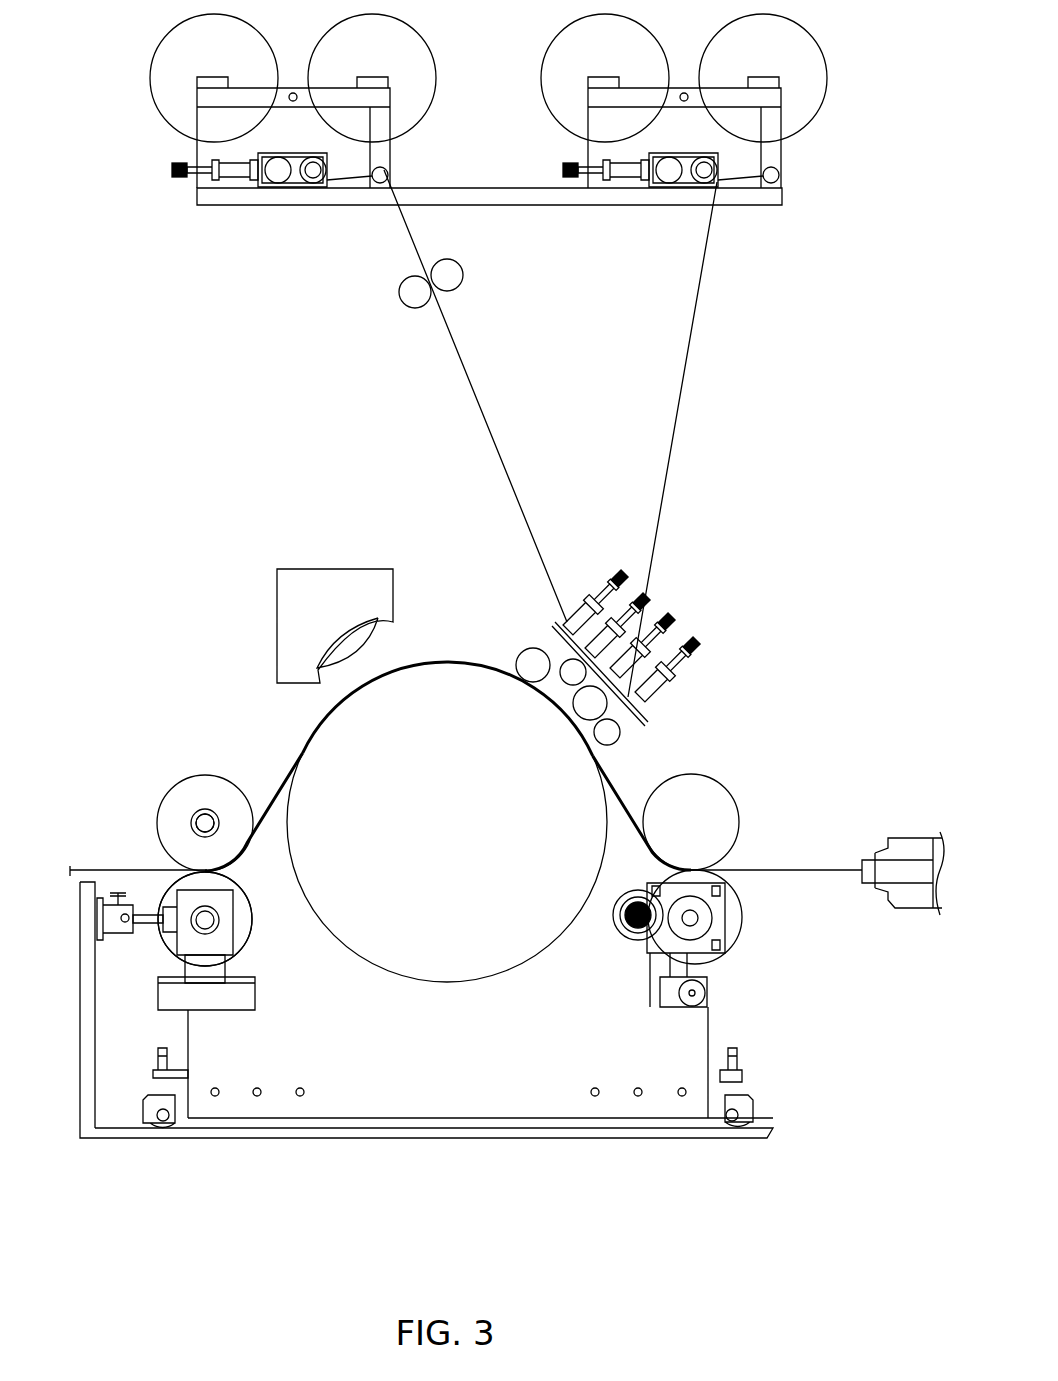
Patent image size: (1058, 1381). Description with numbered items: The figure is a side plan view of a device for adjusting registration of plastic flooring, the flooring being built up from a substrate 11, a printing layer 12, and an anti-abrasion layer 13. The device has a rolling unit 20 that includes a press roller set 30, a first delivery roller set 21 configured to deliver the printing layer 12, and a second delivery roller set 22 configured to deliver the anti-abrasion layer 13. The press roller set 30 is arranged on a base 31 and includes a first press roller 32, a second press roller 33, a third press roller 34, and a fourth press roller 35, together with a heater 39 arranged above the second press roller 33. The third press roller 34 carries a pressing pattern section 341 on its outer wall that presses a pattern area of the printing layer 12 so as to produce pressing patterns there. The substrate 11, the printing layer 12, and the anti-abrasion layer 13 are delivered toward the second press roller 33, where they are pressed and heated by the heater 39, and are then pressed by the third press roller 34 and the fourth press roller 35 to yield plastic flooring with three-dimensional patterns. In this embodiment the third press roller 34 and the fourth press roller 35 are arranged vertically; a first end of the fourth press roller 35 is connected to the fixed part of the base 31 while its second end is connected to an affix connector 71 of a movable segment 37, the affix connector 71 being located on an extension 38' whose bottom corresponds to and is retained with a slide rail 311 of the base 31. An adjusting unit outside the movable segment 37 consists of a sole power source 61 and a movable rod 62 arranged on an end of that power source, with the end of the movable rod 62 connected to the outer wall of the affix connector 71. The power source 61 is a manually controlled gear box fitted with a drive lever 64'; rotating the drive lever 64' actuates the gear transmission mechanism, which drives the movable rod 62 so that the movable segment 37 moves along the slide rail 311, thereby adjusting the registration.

The substrate 11 is at (820, 868).
The printing layer 12 is at (705, 248).
The anti-abrasion layer 13 is at (412, 235).
The rolling unit 20 is at (872, 358).
The first delivery roller set 21 is at (775, 152).
The second delivery roller set 22 is at (205, 148).
The press roller set 30 is at (762, 688).
The base 31 is at (427, 1093).
The slide rail 311 is at (252, 980).
The first press roller 32 is at (730, 935).
The second press roller 33 is at (395, 975).
The third press roller 34 is at (223, 790).
The pressing pattern section 341 is at (195, 775).
The fourth press roller 35 is at (148, 922).
The movable segment 37 is at (181, 890).
The extension 38' is at (174, 996).
The heater 39 is at (283, 648).
The power source 61 is at (113, 930).
The movable rod 62 is at (170, 968).
The drive lever 64' is at (91, 860).
The affix connector 71 is at (230, 902).